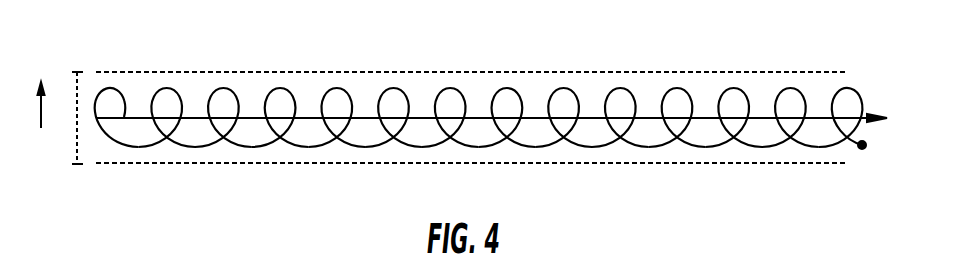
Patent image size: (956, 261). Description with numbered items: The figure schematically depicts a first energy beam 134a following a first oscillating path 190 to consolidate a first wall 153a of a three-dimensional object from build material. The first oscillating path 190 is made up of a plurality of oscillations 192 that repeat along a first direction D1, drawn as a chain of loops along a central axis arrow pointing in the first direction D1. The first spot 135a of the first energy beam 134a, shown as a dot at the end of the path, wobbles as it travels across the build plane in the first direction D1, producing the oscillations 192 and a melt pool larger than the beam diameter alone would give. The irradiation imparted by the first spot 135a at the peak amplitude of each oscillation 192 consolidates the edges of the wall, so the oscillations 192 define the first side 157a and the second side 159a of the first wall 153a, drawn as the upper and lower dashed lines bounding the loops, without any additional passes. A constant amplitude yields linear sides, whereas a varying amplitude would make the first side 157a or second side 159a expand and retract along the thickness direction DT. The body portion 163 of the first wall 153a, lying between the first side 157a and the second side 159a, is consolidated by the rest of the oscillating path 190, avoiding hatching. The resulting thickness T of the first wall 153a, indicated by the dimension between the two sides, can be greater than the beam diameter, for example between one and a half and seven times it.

The first oscillating path 190 is at (129, 88).
The oscillations 192 is at (297, 97).
The body portion 163 is at (363, 132).
The first wall 153a is at (427, 68).
The first side 157a is at (187, 72).
The second side 159a is at (205, 163).
The first energy beam 134a is at (589, 83).
The first spot 135a is at (862, 149).
The first direction D1 is at (889, 119).
The thickness direction DT is at (43, 87).
The thickness T is at (77, 145).